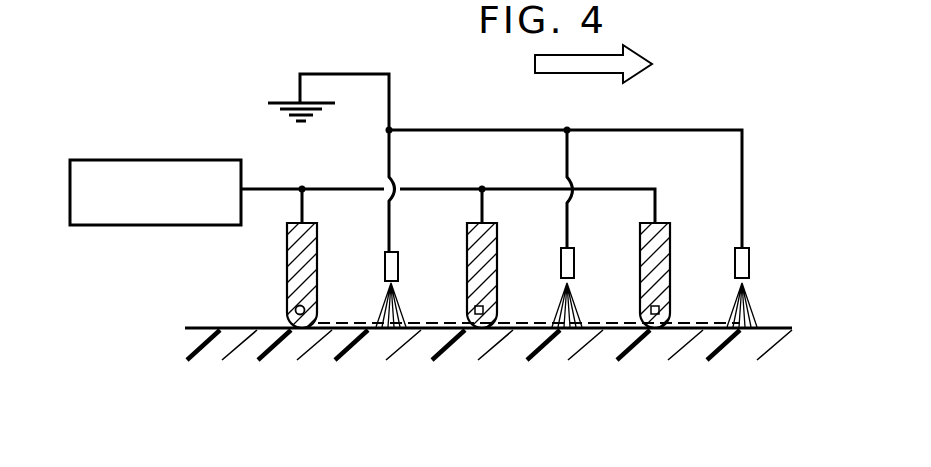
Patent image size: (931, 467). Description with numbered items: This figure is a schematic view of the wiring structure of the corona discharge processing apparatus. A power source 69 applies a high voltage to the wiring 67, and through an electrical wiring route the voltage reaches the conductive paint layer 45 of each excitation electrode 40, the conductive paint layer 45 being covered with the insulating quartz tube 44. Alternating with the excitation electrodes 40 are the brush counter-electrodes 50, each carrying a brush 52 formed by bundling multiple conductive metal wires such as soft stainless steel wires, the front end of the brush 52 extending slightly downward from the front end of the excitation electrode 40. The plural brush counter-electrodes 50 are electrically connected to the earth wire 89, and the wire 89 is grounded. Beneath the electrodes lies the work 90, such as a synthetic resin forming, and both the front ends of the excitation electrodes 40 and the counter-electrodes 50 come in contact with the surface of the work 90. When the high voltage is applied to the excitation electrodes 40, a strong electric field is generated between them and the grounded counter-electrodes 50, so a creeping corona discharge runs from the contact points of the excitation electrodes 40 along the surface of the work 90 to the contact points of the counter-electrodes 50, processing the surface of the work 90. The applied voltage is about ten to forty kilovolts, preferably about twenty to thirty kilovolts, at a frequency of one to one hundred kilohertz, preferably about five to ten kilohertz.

The excitation electrode 40 is at (287, 282).
The quartz tube 44 is at (287, 258).
The conductive paint layer 45 is at (296, 310).
The brush counter-electrode 50 is at (399, 269).
The brush 52 is at (390, 331).
The wiring 67 is at (265, 188).
The power source 69 is at (183, 206).
The earth wire 89 is at (392, 96).
The work 90 is at (554, 414).